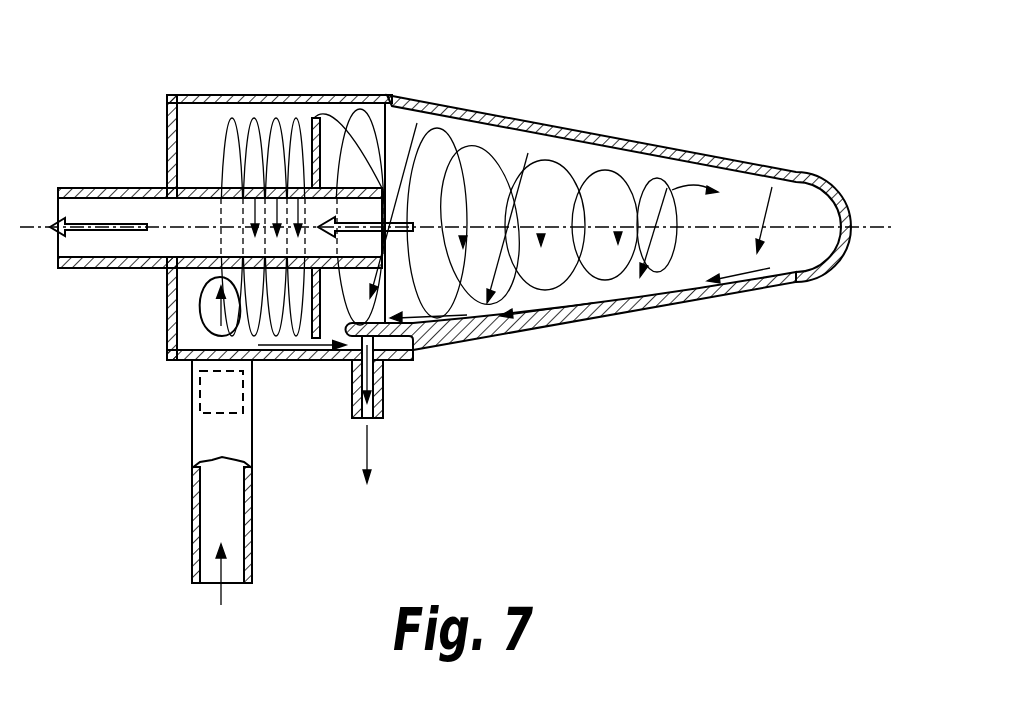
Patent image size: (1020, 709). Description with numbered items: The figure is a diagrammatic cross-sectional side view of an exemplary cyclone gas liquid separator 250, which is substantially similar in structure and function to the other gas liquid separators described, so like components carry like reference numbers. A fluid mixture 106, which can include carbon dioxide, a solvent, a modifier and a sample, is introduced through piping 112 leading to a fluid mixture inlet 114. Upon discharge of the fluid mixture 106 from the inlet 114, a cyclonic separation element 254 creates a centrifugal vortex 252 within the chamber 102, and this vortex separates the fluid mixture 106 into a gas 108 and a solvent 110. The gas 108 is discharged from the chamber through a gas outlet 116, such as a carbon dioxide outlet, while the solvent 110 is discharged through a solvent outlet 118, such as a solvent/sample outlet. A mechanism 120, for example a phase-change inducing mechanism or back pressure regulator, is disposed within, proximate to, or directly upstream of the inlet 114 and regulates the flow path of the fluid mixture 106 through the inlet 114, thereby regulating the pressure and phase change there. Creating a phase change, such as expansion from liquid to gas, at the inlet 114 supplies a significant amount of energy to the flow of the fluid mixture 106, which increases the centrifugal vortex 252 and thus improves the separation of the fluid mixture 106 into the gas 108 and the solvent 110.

The gas liquid separator 250 is at (457, 310).
The gas liquid separator 102 is at (540, 123).
The gas 108 is at (440, 128).
The gas outlet 116 is at (126, 186).
The fluid mixture inlet 114 is at (255, 363).
The solvent outlet 118 is at (392, 357).
The solvent 110 is at (384, 412).
The piping 112 is at (192, 525).
The fluid mixture 106 is at (220, 474).
The mechanism 120 is at (200, 383).
The centrifugal vortex 252 is at (212, 176).
The cyclonic separation element 254 is at (268, 165).